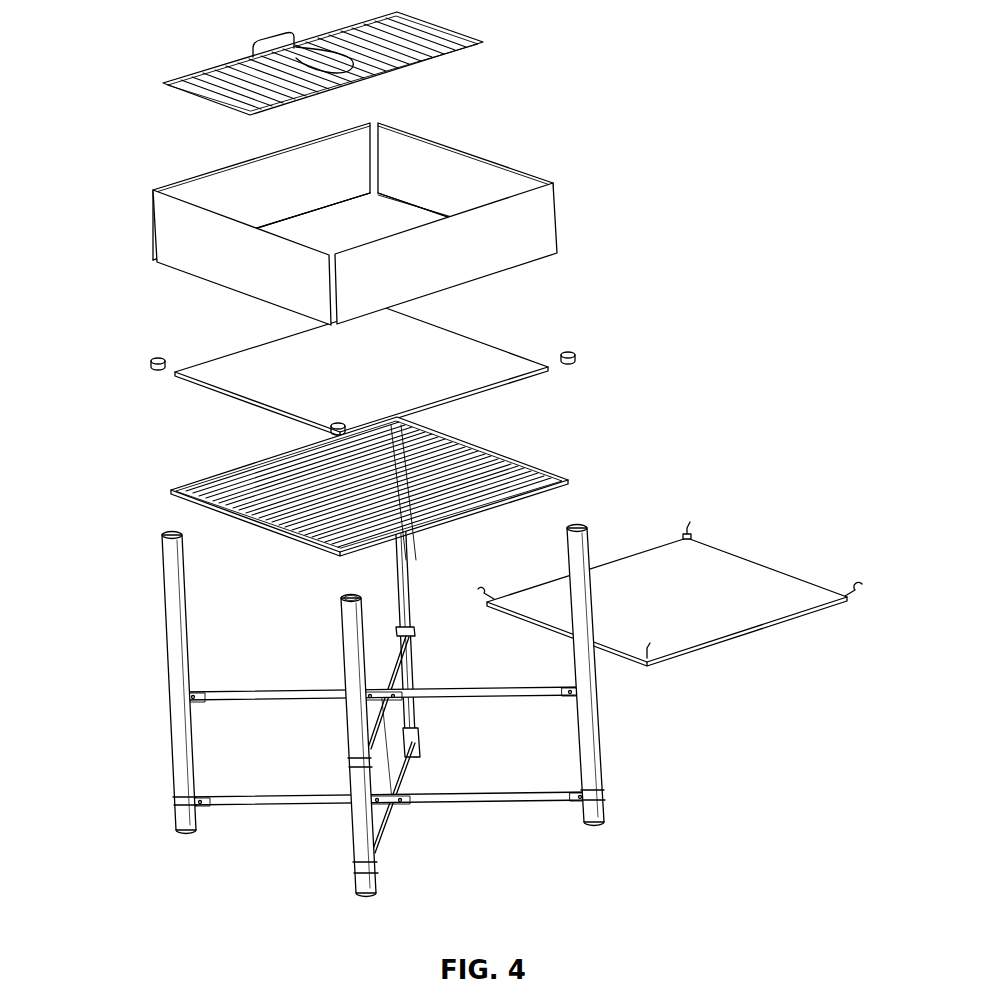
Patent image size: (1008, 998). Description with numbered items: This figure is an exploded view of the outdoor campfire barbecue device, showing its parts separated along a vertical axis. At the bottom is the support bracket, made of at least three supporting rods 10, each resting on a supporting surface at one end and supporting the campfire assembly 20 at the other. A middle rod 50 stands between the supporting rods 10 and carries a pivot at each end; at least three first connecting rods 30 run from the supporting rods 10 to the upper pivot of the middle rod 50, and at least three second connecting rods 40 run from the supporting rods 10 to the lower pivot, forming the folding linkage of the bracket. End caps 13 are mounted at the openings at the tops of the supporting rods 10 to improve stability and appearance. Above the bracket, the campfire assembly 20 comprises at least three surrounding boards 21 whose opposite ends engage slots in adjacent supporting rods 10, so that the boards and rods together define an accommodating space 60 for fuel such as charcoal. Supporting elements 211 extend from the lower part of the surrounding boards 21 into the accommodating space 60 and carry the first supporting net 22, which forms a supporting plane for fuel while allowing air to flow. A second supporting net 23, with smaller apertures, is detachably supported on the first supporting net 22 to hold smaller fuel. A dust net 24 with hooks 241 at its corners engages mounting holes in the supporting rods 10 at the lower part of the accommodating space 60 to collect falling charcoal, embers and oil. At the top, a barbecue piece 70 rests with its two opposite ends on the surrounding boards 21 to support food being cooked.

The supporting rod 10 is at (590, 750).
The end cap 13 is at (153, 359).
The campfire assembly 20 is at (723, 210).
The surrounding board 21 is at (387, 216).
The supporting element 211 is at (437, 209).
The first supporting net 22 is at (540, 465).
The second supporting net 23 is at (530, 370).
The dust net 24 is at (673, 599).
The hook 241 is at (693, 524).
The first connecting rod 30 is at (232, 697).
The second connecting rod 40 is at (235, 800).
The middle rod 50 is at (385, 773).
The accommodating space 60 is at (318, 228).
The barbecue piece 70 is at (437, 62).